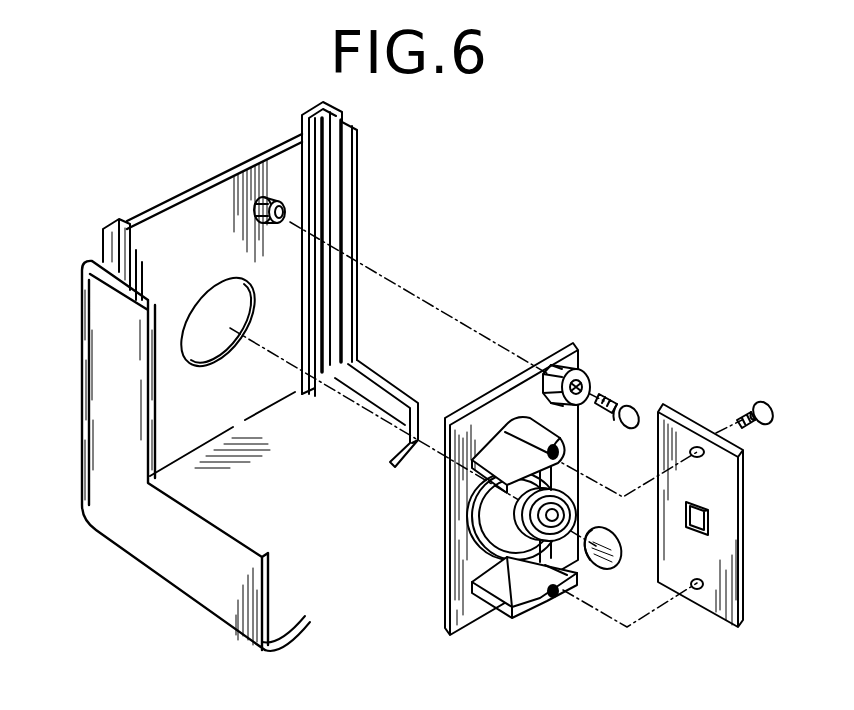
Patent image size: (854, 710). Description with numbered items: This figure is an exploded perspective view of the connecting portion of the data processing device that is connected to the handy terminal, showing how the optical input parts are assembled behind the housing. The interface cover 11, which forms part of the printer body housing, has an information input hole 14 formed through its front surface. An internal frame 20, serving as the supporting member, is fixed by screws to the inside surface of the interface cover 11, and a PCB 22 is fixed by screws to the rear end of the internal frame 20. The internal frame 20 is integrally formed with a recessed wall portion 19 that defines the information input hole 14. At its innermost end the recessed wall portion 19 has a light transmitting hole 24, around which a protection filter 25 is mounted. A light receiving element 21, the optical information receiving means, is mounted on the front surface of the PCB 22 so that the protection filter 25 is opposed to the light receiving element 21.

The interface cover 11 is at (189, 228).
The information input hole 14 is at (196, 336).
The recessed wall portion 19 is at (498, 524).
The internal frame 20 is at (487, 418).
The light receiving element 21 is at (711, 525).
The PCB (printed circuit board) 22 is at (683, 437).
The light transmitting hole 24 is at (546, 565).
The protection filter 25 is at (608, 553).